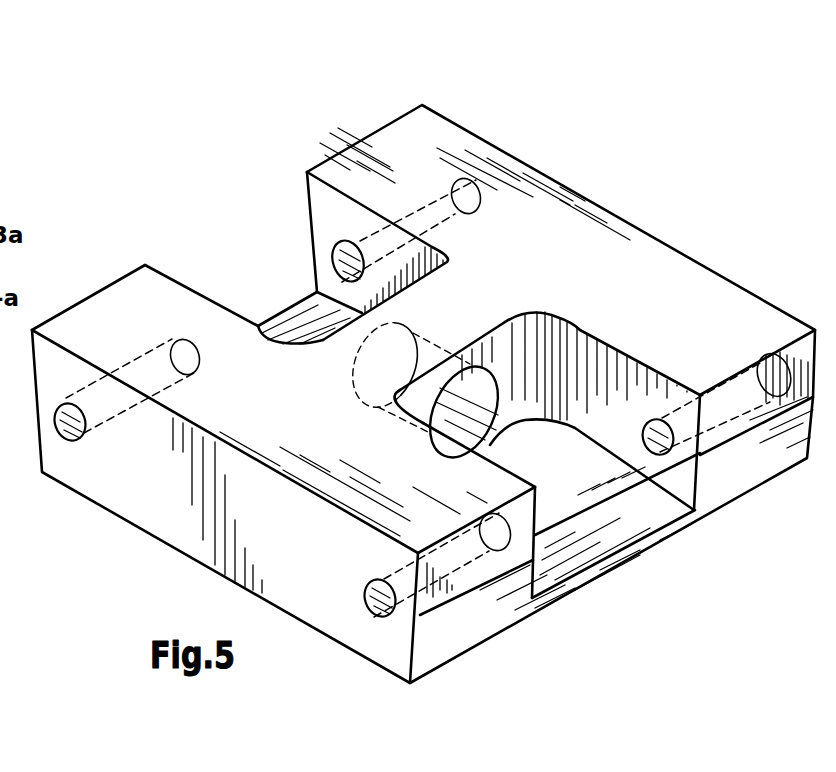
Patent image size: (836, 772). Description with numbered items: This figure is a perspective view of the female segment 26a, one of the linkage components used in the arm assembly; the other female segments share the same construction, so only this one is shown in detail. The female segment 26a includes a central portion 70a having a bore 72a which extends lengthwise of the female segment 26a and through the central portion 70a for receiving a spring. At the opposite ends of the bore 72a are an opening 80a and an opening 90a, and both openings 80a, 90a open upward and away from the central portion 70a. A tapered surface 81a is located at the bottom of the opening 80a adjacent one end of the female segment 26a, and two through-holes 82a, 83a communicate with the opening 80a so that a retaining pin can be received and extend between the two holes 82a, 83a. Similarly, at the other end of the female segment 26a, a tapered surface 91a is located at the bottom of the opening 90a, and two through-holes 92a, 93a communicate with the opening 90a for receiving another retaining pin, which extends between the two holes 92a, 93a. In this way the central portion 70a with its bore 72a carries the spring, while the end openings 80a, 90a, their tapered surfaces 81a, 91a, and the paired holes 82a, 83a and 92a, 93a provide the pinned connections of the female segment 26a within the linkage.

The female segment 26a is at (525, 120).
The central portion 70a is at (503, 270).
The bore 72a is at (465, 414).
The opening 80a is at (628, 388).
The tapered surface 81a is at (593, 537).
The through-hole 82a is at (377, 600).
The through-hole 83a is at (660, 443).
The opening 90a is at (336, 210).
The tapered surface 91a is at (293, 318).
The through-hole 92a is at (73, 427).
The through-hole 93a is at (349, 246).